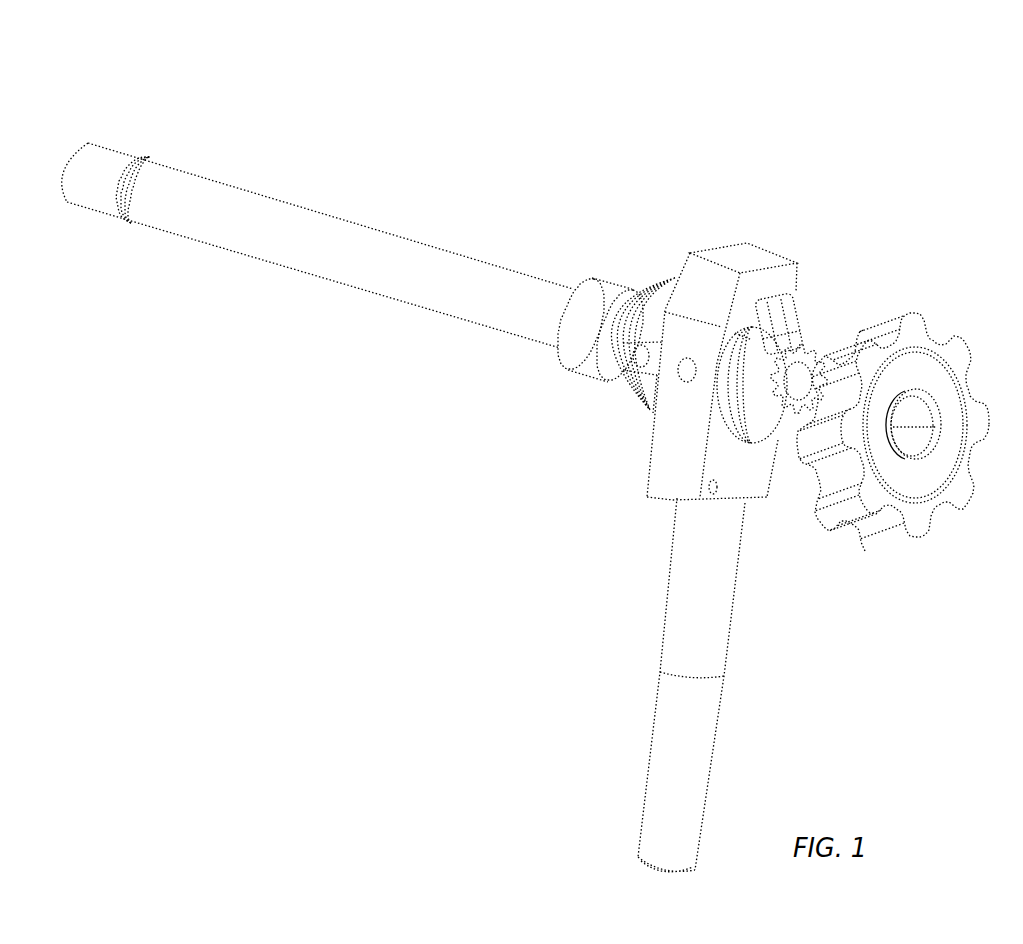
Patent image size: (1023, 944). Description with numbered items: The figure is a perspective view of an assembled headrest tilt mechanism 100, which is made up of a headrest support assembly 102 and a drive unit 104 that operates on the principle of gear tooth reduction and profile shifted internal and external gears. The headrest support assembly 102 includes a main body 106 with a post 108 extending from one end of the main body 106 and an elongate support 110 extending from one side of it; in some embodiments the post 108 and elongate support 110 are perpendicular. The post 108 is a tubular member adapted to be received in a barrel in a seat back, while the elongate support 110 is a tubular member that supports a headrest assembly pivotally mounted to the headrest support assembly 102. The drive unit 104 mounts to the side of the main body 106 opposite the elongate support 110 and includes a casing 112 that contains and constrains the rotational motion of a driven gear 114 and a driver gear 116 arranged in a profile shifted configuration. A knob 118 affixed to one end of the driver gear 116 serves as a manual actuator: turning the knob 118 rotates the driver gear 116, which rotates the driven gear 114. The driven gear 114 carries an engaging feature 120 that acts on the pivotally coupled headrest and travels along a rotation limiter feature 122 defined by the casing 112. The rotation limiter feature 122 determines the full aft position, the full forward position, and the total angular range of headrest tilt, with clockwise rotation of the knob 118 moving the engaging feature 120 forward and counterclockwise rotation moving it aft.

The headrest tilt mechanism 100 is at (500, 489).
The headrest support assembly 102 is at (806, 245).
The drive unit 104 is at (1012, 303).
The main body 106 is at (662, 477).
The post 108 is at (684, 563).
The elongate support 110 is at (307, 261).
The casing 112 is at (727, 405).
The driven gear 114 is at (758, 407).
The driver gear 116 is at (788, 397).
The knob 118 is at (928, 483).
The engaging feature 120 is at (787, 317).
The rotation limiter feature 122 is at (737, 326).